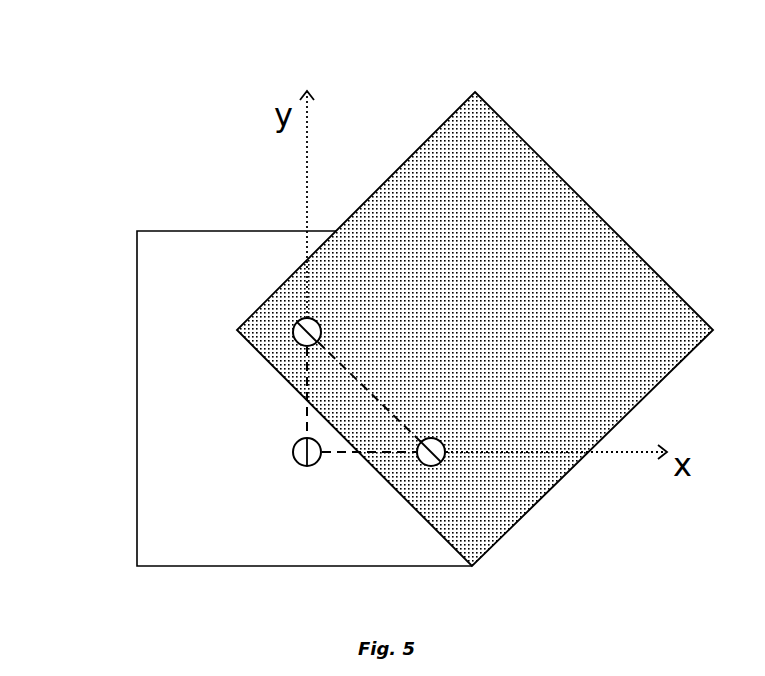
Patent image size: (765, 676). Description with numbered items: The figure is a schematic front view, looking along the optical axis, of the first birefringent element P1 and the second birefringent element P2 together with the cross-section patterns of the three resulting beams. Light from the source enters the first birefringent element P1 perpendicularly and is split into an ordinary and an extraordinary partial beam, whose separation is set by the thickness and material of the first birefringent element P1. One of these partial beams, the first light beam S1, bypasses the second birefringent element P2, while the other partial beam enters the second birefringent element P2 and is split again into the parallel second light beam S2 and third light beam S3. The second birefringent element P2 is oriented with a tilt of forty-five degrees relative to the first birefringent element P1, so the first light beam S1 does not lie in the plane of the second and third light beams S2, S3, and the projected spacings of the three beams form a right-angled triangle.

The first birefringent element P1 is at (160, 481).
The second birefringent element P2 is at (588, 217).
The first light beam S1 is at (316, 478).
The second light beam S2 is at (464, 479).
The third light beam S3 is at (333, 316).